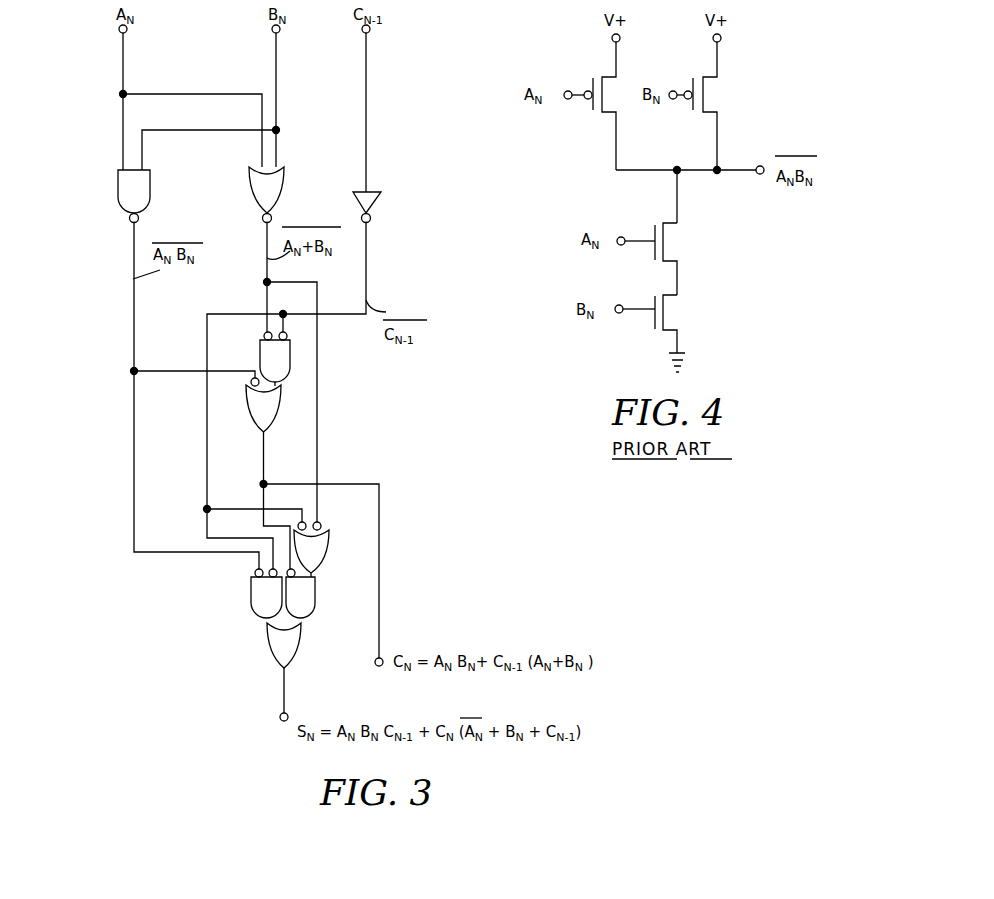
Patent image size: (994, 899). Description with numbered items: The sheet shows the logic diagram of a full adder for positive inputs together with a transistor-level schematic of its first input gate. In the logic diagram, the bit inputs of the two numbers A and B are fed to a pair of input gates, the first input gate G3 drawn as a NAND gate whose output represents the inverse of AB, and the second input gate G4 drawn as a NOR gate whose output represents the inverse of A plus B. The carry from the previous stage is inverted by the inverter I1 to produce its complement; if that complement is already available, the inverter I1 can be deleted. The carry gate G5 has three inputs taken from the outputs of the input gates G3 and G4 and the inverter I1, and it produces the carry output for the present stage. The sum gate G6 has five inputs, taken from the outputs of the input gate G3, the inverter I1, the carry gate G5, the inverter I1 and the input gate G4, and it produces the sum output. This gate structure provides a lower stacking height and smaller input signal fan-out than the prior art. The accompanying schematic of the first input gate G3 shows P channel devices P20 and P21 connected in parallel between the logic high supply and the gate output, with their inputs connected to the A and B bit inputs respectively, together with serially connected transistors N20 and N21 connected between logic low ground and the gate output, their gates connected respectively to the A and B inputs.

In FIG. 3, the first input gate G3 is at (160, 171).
In FIG. 4, the first input gate G3 is at (767, 130).
In FIG. 3, the second input gate G4 is at (287, 176).
In FIG. 3, the carry gate G5 is at (253, 362).
In FIG. 3, the sum gate G6 is at (254, 639).
In FIG. 3, the inverter I1 is at (374, 201).
In FIG. 4, the P channel device P20 is at (590, 106).
In FIG. 4, the P channel device P21 is at (705, 106).
In FIG. 4, the serial connected transistor N20 is at (659, 259).
In FIG. 4, the serial connected transistor N21 is at (659, 324).